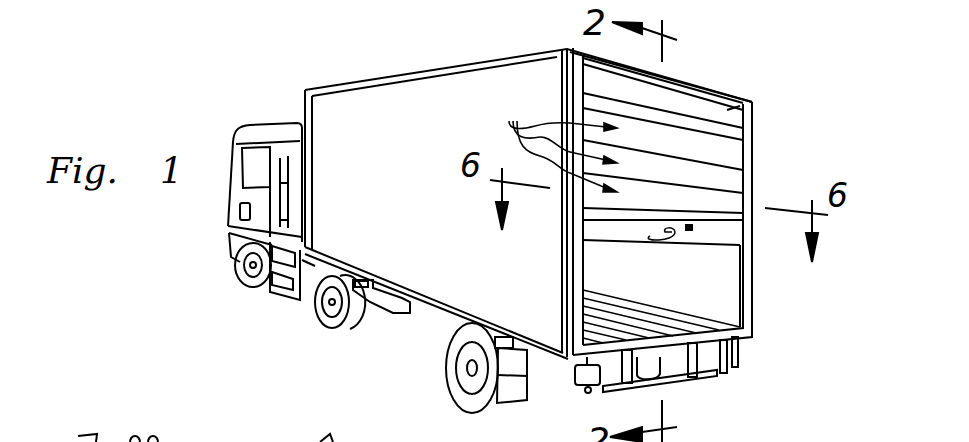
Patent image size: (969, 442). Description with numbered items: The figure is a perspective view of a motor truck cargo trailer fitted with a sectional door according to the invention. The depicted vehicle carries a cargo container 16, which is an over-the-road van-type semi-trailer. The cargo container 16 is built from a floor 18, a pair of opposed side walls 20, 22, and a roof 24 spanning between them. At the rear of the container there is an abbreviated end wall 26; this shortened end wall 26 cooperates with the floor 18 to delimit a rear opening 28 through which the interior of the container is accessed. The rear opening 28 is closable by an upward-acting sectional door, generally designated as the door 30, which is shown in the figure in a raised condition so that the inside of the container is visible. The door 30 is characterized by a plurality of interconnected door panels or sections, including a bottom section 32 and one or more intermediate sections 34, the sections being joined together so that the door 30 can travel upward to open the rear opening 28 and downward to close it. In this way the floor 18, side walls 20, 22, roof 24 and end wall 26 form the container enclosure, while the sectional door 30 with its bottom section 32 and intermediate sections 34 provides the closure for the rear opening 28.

The cargo container 16 is at (431, 58).
The floor 18 is at (698, 352).
The side wall 20 is at (437, 282).
The side wall 22 is at (757, 293).
The roof 24 is at (703, 82).
The abbreviated end wall 26 is at (751, 100).
The rear opening 28 is at (592, 262).
The sectional door 30 is at (745, 150).
The bottom section 32 is at (632, 236).
The intermediate section 34 is at (555, 147).